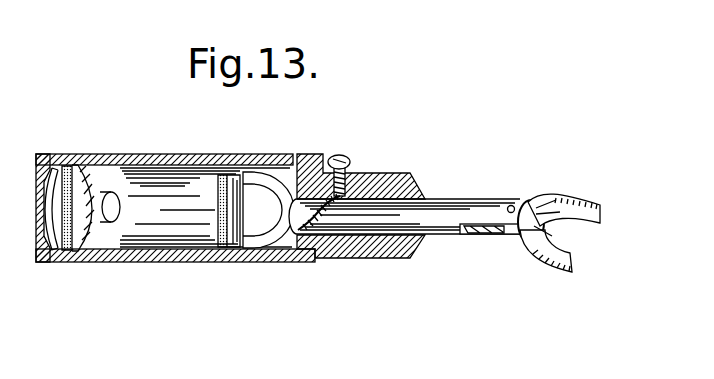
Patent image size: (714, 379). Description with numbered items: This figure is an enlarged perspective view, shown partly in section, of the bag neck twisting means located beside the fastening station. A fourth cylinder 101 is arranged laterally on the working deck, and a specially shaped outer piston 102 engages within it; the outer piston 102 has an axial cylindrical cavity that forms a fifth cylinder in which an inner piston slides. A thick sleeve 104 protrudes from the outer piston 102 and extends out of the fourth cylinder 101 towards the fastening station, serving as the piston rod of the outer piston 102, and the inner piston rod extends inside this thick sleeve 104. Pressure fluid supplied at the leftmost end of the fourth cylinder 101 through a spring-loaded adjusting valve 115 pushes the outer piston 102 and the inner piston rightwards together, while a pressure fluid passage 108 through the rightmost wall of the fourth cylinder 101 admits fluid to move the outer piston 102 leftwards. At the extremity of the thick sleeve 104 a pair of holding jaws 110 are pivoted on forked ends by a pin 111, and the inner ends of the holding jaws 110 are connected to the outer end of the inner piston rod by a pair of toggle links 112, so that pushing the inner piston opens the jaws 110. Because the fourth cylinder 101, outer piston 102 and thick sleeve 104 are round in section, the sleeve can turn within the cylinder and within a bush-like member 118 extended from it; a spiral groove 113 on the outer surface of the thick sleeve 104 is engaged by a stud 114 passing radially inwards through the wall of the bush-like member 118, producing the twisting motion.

The fourth cylinder 101 is at (144, 156).
The outer piston 102 is at (238, 160).
The thick sleeve 104 is at (457, 197).
The pressure fluid passage 108 is at (288, 156).
The holding jaws 110 is at (582, 242).
The pin 111 is at (512, 205).
The toggle links 112 is at (487, 240).
The spiral groove 113 is at (300, 155).
The stud 114 is at (352, 160).
The spring-loaded adjusting valve 115 is at (77, 160).
The bush-like member 118 is at (372, 260).